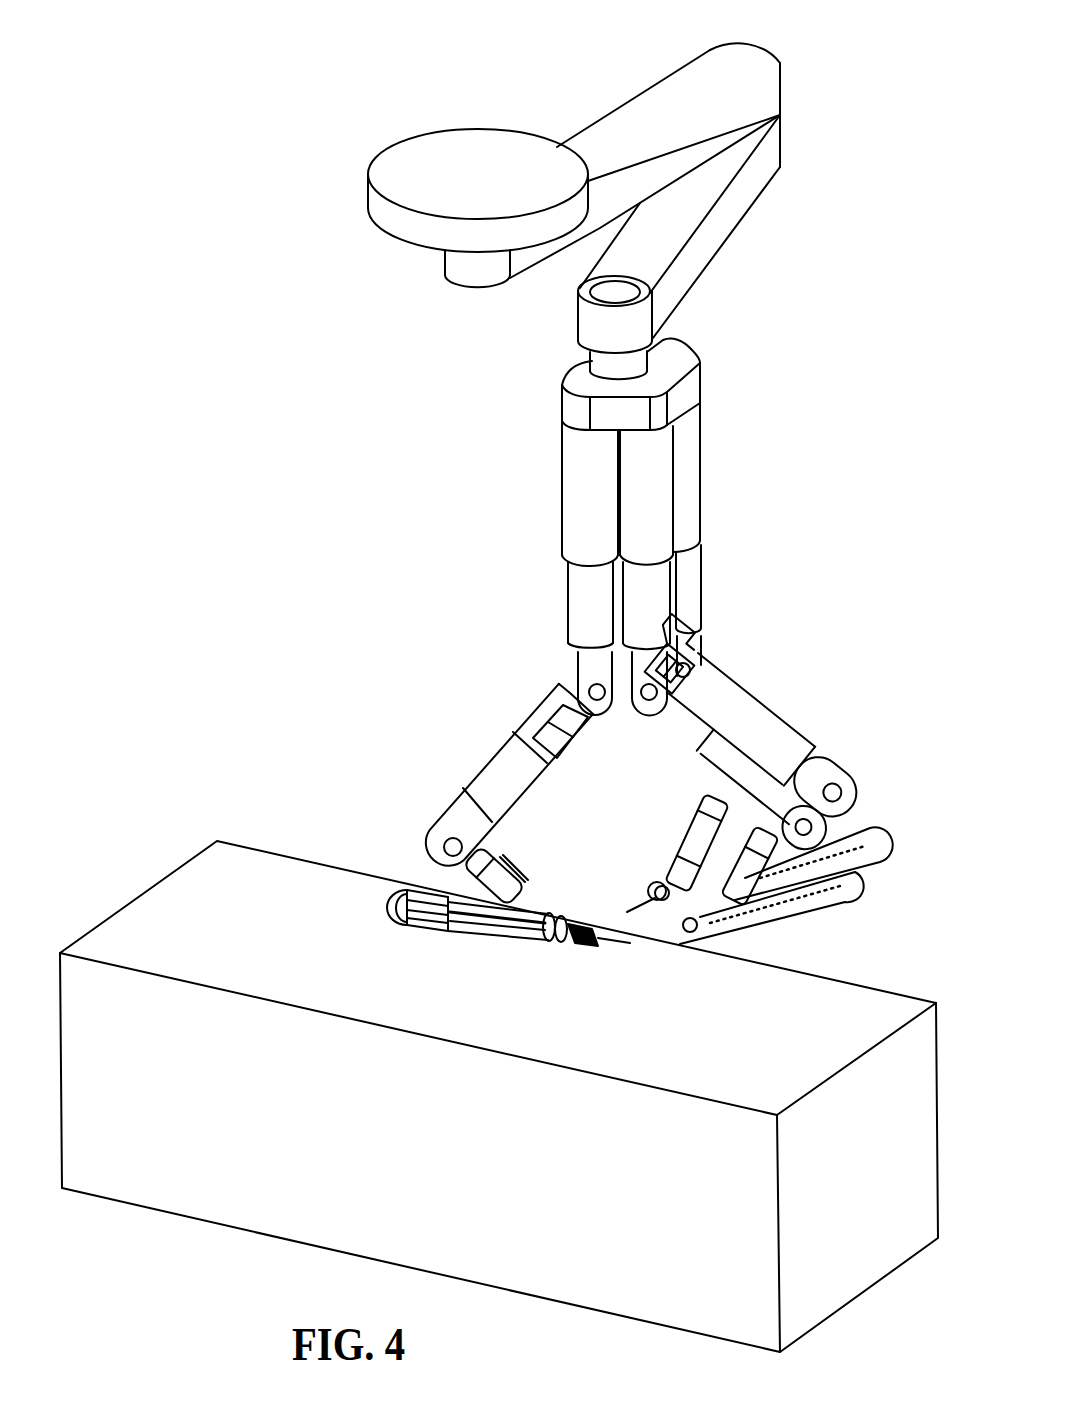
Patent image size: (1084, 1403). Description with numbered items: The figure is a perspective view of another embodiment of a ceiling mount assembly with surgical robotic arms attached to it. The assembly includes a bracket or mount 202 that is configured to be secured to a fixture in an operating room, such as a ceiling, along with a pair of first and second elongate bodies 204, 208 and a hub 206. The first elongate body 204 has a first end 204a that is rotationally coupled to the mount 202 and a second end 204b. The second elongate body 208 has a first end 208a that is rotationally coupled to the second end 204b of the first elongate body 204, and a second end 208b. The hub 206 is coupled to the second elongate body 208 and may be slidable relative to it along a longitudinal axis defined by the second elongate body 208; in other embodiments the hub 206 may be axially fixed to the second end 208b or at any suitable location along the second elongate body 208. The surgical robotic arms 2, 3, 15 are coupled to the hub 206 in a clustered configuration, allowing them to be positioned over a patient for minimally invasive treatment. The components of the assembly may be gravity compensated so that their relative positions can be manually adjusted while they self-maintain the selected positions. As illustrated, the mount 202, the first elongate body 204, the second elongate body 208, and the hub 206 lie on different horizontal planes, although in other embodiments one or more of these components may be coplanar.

The mount 202 is at (516, 140).
The first elongate body 204 is at (657, 84).
The first end of first elongate body 204a is at (473, 277).
The second end of first elongate body 204b is at (749, 57).
The second elongate body 208 is at (740, 231).
The first end of second elongate body 208a is at (782, 140).
The second end of second elongate body 208b is at (583, 323).
The hub 206 is at (697, 384).
The surgical robotic arm 2 is at (570, 578).
The surgical robotic arm 3 is at (663, 538).
The surgical robotic arm 15 is at (688, 487).